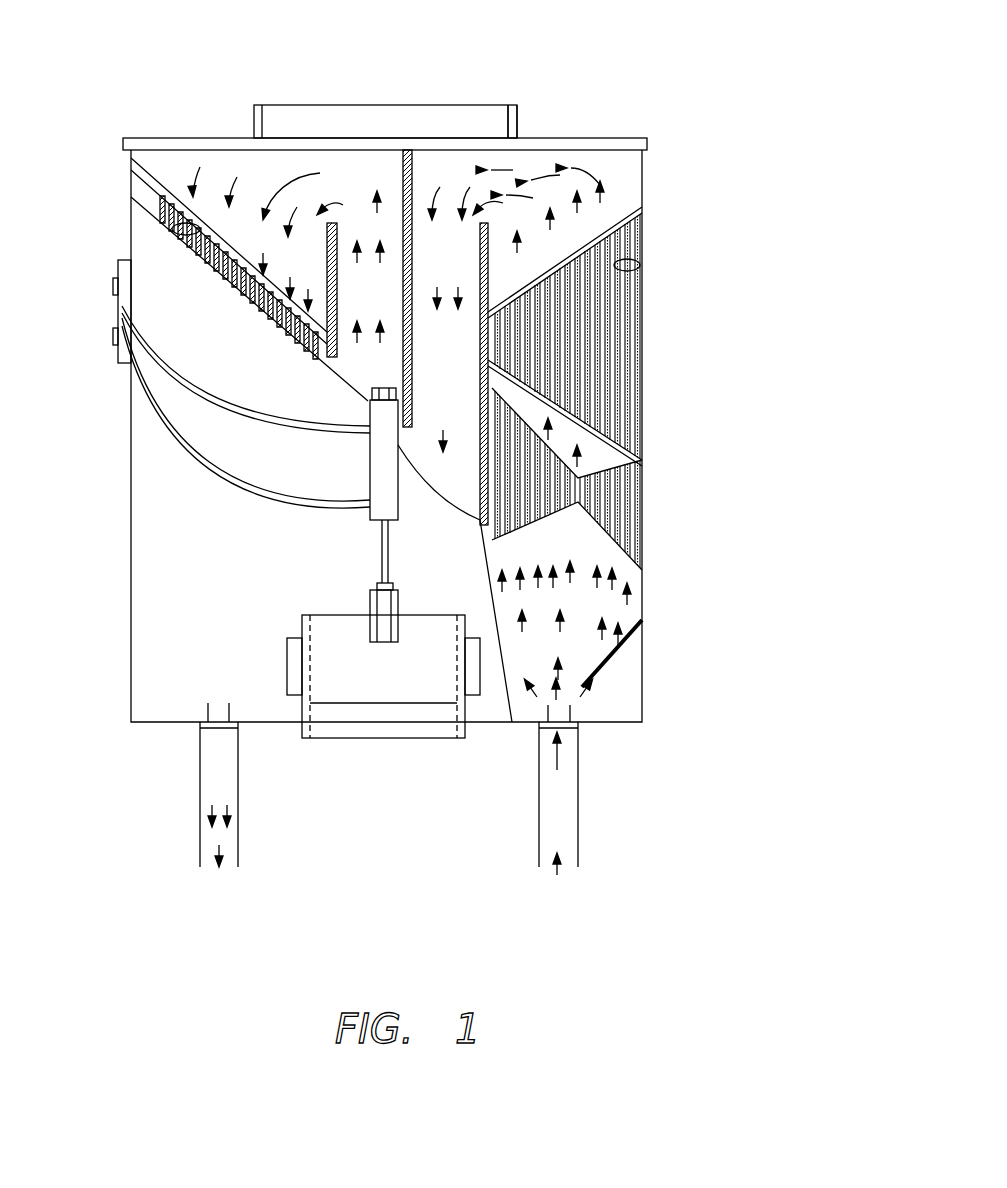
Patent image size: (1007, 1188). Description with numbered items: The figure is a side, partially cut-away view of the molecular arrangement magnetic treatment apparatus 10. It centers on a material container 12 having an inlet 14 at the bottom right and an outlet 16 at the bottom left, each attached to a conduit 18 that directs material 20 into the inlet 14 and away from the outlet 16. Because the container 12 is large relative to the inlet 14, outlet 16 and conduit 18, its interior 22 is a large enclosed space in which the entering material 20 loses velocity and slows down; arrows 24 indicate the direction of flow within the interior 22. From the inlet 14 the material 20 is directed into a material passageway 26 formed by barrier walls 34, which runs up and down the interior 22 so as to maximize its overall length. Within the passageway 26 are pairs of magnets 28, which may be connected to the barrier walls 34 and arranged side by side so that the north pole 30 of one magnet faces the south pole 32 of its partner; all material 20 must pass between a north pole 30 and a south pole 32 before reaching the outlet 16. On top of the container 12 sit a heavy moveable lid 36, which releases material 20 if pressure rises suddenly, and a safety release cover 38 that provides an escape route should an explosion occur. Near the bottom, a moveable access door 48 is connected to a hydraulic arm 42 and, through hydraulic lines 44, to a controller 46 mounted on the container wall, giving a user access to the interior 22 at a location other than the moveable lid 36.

The molecular arrangement magnetic treatment apparatus and method 10 is at (782, 38).
The material container 12 is at (131, 200).
The inlet 14 is at (586, 731).
The outlet 16 is at (243, 728).
The conduit 18 is at (240, 818).
The material 20 is at (231, 770).
The interior 22 is at (343, 160).
The flow direction arrows 24 is at (292, 178).
The material passageway 26 is at (379, 377).
The magnets 28 is at (190, 236).
The north pole 30 is at (623, 195).
The south pole 32 is at (636, 186).
The barrier walls 34 is at (337, 305).
The moveable lid 36 is at (518, 115).
The safety release cover 38 is at (383, 106).
The hydraulic arm 42 is at (370, 513).
The hydraulic lines 44 is at (228, 415).
The controller 46 is at (115, 285).
The moveable access door 48 is at (398, 691).